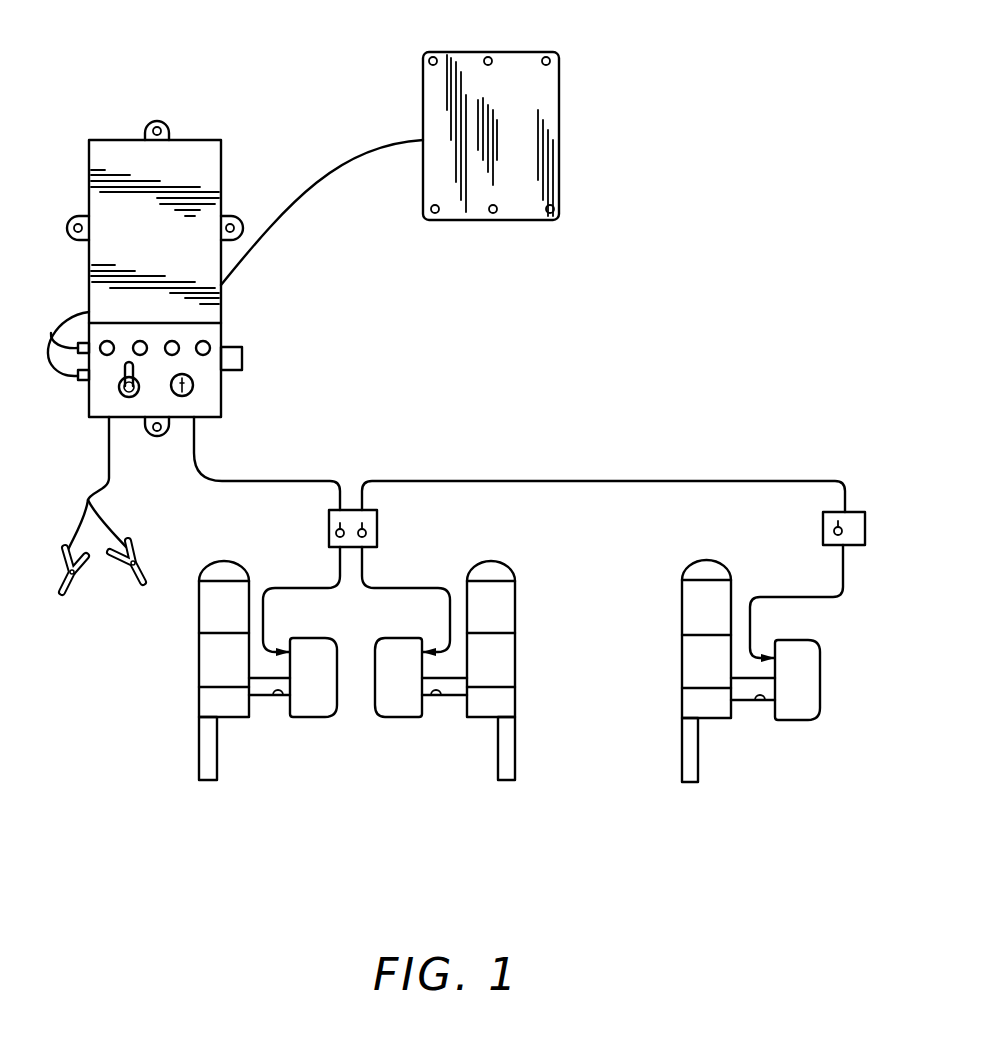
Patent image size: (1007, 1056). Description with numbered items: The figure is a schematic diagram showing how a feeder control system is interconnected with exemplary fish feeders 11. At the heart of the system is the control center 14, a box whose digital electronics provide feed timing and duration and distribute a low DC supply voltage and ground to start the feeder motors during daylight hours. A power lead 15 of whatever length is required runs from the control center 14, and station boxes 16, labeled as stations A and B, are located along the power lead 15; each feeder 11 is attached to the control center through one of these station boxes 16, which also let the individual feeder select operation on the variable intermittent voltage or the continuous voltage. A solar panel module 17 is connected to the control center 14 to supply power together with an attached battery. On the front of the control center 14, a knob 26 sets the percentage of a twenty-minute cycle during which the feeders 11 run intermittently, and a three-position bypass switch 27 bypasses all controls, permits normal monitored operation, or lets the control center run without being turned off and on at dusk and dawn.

The feeder 11 is at (663, 608).
The control center 14 is at (223, 137).
The power lead 15 is at (275, 478).
The station box 16 is at (378, 518).
The solar panel module 17 is at (561, 128).
The knob 26 is at (210, 398).
The bypass switch 27 is at (100, 390).